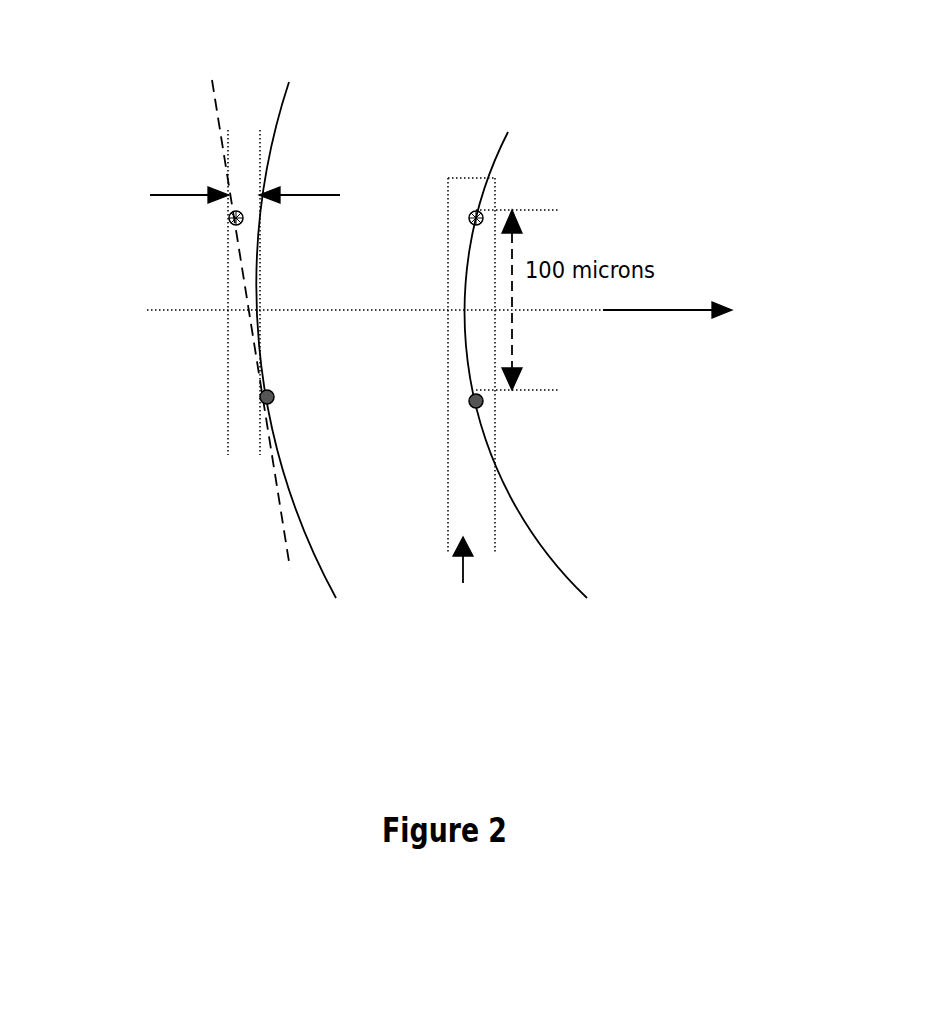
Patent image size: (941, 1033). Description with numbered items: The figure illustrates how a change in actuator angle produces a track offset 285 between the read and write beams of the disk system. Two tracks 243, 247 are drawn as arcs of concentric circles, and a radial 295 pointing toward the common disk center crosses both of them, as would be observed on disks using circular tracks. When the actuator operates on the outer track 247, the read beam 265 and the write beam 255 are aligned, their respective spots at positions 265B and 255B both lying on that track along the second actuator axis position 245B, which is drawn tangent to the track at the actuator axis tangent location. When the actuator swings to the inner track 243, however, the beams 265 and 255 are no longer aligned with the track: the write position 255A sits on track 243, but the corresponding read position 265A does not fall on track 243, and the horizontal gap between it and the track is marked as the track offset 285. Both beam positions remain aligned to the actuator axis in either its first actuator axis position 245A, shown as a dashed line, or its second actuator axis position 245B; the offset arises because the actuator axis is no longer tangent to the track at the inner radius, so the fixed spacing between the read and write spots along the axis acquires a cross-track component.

The track 243 is at (300, 520).
The first actuator axis position 245A is at (242, 366).
The second actuator axis position 245B is at (510, 607).
The track 247 is at (535, 530).
The write beam 255 is at (274, 397).
The write position 255A is at (261, 401).
The write beam position 255B is at (482, 405).
The read beam 265 is at (243, 222).
The read position 265A is at (231, 222).
The read beam position 265B is at (481, 213).
The track offset 285 is at (176, 201).
The radial 295 is at (534, 326).